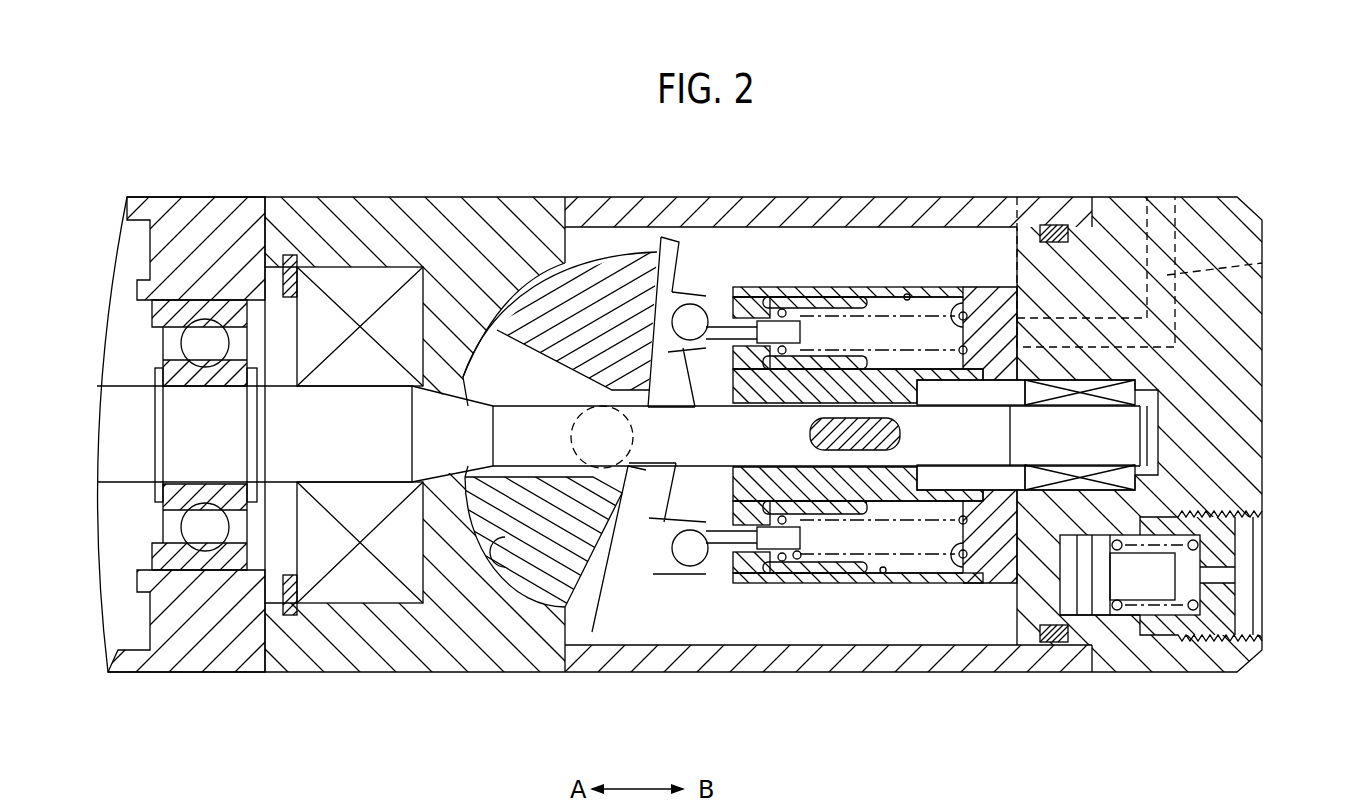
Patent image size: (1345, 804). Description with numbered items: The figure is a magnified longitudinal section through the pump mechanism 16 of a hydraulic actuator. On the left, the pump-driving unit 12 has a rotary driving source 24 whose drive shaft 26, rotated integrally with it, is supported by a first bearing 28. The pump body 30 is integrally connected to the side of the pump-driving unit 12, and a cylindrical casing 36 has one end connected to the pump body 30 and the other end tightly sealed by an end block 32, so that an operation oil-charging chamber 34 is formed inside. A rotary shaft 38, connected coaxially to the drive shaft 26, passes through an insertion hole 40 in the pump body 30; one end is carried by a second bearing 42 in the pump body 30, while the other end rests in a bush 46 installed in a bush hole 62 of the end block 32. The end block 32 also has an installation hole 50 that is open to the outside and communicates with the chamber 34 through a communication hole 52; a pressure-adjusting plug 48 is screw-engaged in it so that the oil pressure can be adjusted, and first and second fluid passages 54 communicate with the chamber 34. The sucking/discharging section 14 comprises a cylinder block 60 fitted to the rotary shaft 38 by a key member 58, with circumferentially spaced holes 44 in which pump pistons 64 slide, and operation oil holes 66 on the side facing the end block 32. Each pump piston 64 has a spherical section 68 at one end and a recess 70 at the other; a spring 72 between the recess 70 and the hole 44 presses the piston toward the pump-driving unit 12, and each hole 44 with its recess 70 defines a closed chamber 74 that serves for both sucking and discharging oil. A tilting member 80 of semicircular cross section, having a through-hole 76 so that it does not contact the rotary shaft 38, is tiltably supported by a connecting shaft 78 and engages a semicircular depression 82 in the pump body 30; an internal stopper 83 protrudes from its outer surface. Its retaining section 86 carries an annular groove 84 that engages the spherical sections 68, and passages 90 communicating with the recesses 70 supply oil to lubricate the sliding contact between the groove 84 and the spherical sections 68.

The pump-driving unit 12 is at (186, 673).
The sucking/discharging section 14 is at (835, 287).
The pump mechanism 16 is at (1013, 196).
The rotary driving source 24 is at (198, 217).
The drive shaft 26 is at (128, 460).
The first bearing 28 is at (192, 527).
The pump body 30 is at (406, 217).
The end block 32 is at (1197, 212).
The operation oil-charging chamber 34 is at (790, 233).
The cylindrical casing 36 is at (893, 212).
The rotary shaft 38 is at (515, 425).
The insertion hole 40 is at (445, 388).
The second bearing 42 is at (362, 597).
The holes 44 is at (908, 294).
The bush 46 is at (1068, 468).
The pressure-adjusting plug 48 is at (1225, 556).
The installation hole 50 is at (1233, 615).
The communication hole 52 is at (1017, 602).
The first fluid passage 54 is at (1262, 263).
The key member 58 is at (812, 436).
The cylinder block 60 is at (777, 297).
The bush hole 62 is at (1140, 399).
The pump pistons 64 is at (721, 294).
The operation oil holes 66 is at (965, 290).
The spherical sections 68 is at (660, 238).
The recesses 70 is at (808, 312).
The springs 72 is at (775, 355).
The chambers 74 is at (932, 362).
The through-hole 76 is at (540, 360).
The connecting shaft 78 is at (623, 440).
The tilting member 80 is at (548, 568).
The depression 82 is at (452, 585).
The internal stopper 83 is at (578, 620).
The annular groove 84 is at (677, 349).
The retaining section 86 is at (653, 560).
The passages 90 is at (700, 315).